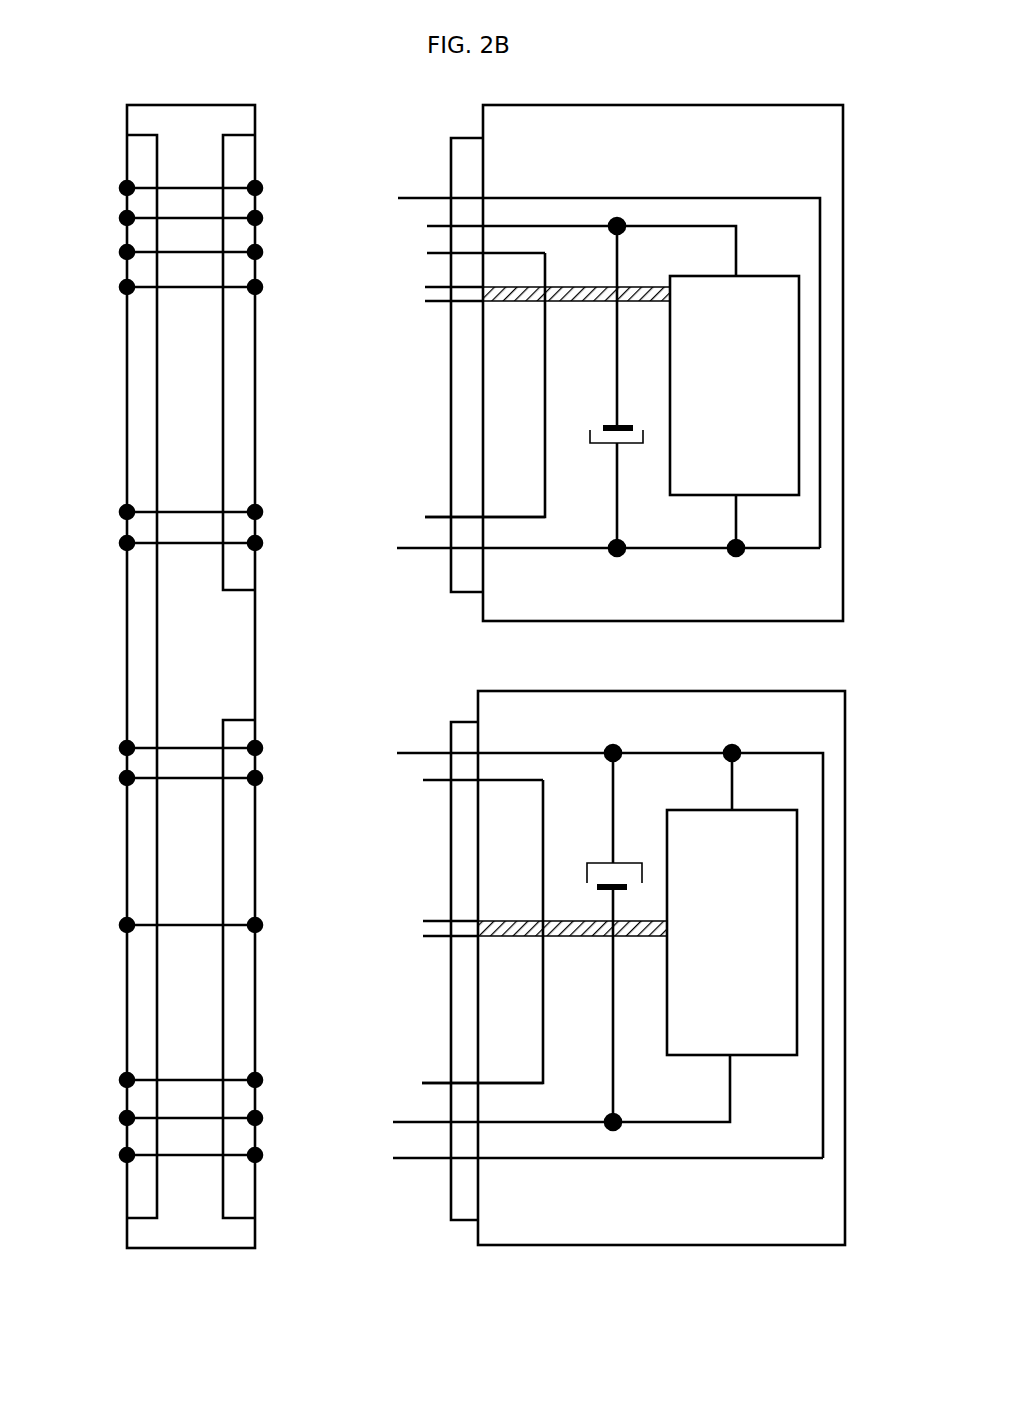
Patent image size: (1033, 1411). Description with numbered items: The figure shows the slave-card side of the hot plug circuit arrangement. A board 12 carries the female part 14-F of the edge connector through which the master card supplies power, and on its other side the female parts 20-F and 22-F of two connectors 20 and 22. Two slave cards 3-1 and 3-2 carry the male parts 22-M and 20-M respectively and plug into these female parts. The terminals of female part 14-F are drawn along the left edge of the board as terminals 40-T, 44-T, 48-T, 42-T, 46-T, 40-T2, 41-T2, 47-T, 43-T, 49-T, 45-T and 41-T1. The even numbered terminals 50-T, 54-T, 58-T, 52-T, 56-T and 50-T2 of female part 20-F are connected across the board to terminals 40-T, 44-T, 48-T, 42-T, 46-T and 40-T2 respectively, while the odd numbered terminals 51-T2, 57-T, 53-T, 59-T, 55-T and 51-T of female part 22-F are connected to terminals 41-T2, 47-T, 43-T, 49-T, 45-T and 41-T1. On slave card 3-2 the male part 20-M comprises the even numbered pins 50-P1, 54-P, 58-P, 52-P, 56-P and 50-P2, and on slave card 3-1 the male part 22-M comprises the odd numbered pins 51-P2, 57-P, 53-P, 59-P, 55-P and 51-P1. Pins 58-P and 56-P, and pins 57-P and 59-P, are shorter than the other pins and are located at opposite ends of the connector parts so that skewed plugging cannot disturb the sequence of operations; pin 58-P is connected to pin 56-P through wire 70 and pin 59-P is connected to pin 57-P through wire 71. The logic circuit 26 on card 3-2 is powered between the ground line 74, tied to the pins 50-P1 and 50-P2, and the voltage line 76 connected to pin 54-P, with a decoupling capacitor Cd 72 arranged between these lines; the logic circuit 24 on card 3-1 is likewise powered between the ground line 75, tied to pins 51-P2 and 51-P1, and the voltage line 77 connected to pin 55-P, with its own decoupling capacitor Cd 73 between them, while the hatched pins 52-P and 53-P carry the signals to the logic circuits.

The board 12 is at (191, 709).
The female part of edge connector 14-F is at (137, 1185).
The connector 20 is at (353, 355).
The female part of connector 20-F is at (235, 567).
The male part of connector 20-M is at (458, 577).
The connector 22 is at (350, 1012).
The female part of connector 22-F is at (240, 1183).
The male part of connector 22-M is at (460, 1190).
The slave card 3-1 is at (807, 1247).
The slave card 3-2 is at (753, 106).
The logic circuit assembly 24 is at (732, 932).
The logic circuit assembly 26 is at (734, 385).
The terminal 40-T is at (102, 187).
The terminal 44-T is at (102, 217).
The terminal 48-T is at (102, 251).
The terminal 42-T is at (102, 286).
The terminal 50-T is at (283, 187).
The terminal 54-T is at (283, 217).
The terminal 58-T is at (283, 251).
The terminal 52-T is at (283, 286).
The terminal 46-T is at (102, 499).
The terminal 40-T2 is at (95, 532).
The terminal 56-T is at (283, 512).
The terminal 50-T2 is at (290, 543).
The terminal 41-T2 is at (95, 747).
The terminal 47-T is at (102, 777).
The terminal 51-T2 is at (290, 747).
The terminal 57-T is at (283, 777).
The terminal 43-T is at (102, 924).
The terminal 53-T is at (283, 924).
The terminal 49-T is at (102, 1080).
The terminal 45-T is at (102, 1119).
The terminal 41-T1 is at (95, 1155).
The terminal 59-T is at (283, 1080).
The terminal 55-T is at (283, 1119).
The terminal 51-T is at (283, 1152).
The pin 50-P1 is at (600, 359).
The pin 54-P is at (566, 237).
The pin 58-P is at (470, 239).
The pin 52-P is at (533, 276).
The pin 56-P is at (470, 501).
The pin 50-P2 is at (600, 533).
The pin 51-P2 is at (602, 939).
The pin 57-P is at (469, 767).
The pin 53-P is at (531, 911).
The pin 59-P is at (469, 1067).
The pin 55-P is at (561, 1088).
The pin 51-P1 is at (602, 1143).
The wire 70 is at (545, 427).
The wire 71 is at (542, 803).
The capacitor Cd 72 is at (602, 442).
The capacitor Cd 73 is at (607, 937).
The ground line 74 is at (617, 556).
The ground line 75 is at (668, 753).
The voltage line 76 is at (600, 230).
The voltage line 77 is at (565, 1123).